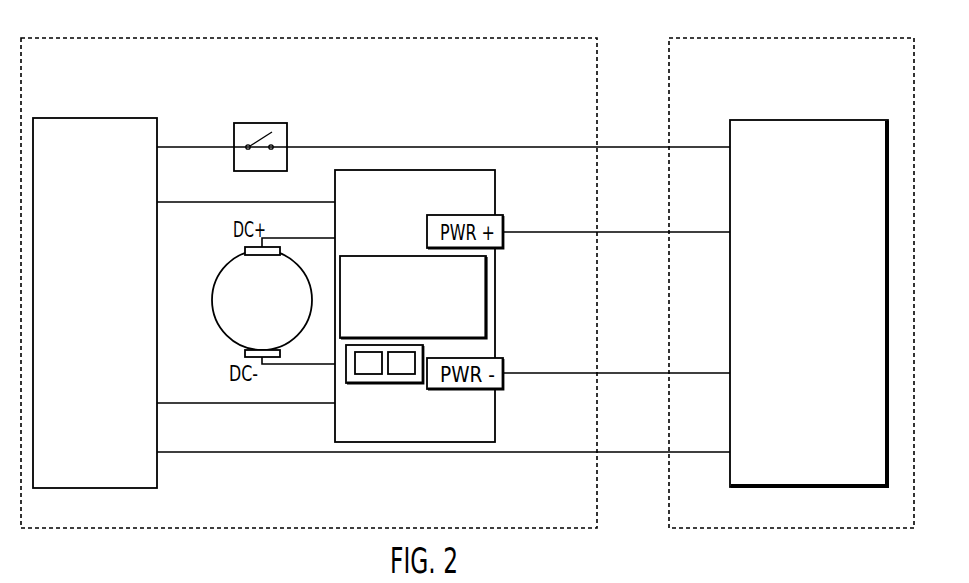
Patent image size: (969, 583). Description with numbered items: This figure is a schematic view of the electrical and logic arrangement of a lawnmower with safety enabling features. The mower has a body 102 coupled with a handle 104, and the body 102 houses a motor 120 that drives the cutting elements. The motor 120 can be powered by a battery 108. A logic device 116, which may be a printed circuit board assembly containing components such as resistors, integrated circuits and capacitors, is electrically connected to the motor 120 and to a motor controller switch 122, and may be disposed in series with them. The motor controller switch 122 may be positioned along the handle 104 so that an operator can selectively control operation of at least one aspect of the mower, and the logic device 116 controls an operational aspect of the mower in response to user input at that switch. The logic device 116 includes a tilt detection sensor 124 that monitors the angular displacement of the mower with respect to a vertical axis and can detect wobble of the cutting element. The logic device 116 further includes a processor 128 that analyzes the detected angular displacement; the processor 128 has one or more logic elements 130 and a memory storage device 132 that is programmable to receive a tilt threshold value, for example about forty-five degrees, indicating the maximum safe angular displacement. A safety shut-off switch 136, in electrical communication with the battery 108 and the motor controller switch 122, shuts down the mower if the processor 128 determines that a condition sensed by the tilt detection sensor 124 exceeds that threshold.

The body 102 is at (352, 38).
The handle 104 is at (848, 38).
The battery 108 is at (157, 481).
The logic device 116 is at (496, 312).
The motor 120 is at (212, 303).
The motor controller switch 122 is at (828, 120).
The tilt detection sensor 124 is at (487, 268).
The processor 128 is at (398, 384).
The logic element 130 is at (360, 364).
The memory storage device 132 is at (400, 363).
The safety shut-off switch 136 is at (287, 135).